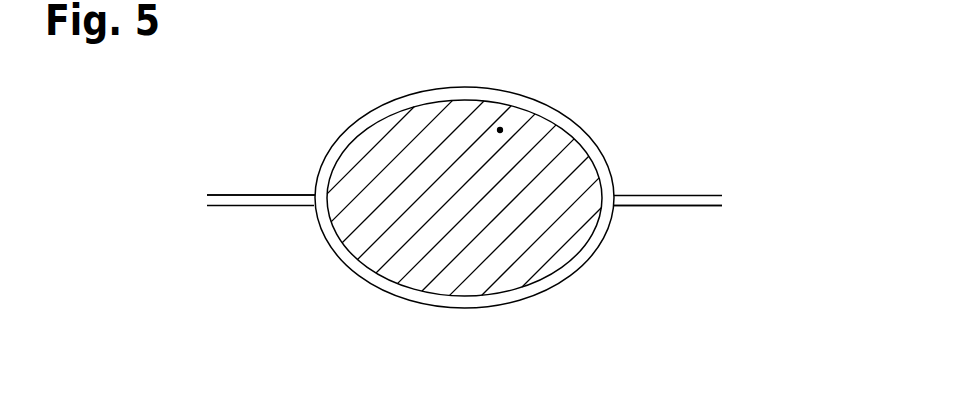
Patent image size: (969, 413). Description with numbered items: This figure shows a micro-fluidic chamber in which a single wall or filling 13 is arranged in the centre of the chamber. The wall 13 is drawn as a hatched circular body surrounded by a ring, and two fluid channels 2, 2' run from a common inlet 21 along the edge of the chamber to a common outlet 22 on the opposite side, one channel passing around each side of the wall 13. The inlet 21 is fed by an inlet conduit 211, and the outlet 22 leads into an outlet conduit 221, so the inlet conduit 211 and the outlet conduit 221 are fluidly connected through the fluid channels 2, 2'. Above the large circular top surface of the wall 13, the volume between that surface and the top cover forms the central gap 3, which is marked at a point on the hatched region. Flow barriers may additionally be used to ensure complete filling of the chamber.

The fluid channel 2 is at (464, 248).
The fluid channel 2' is at (464, 149).
The central gap 3 is at (477, 165).
The wall 13 is at (538, 94).
The inlet 21 is at (261, 250).
The inlet conduit 211 is at (261, 134).
The outlet 22 is at (667, 147).
The outlet conduit 221 is at (667, 272).